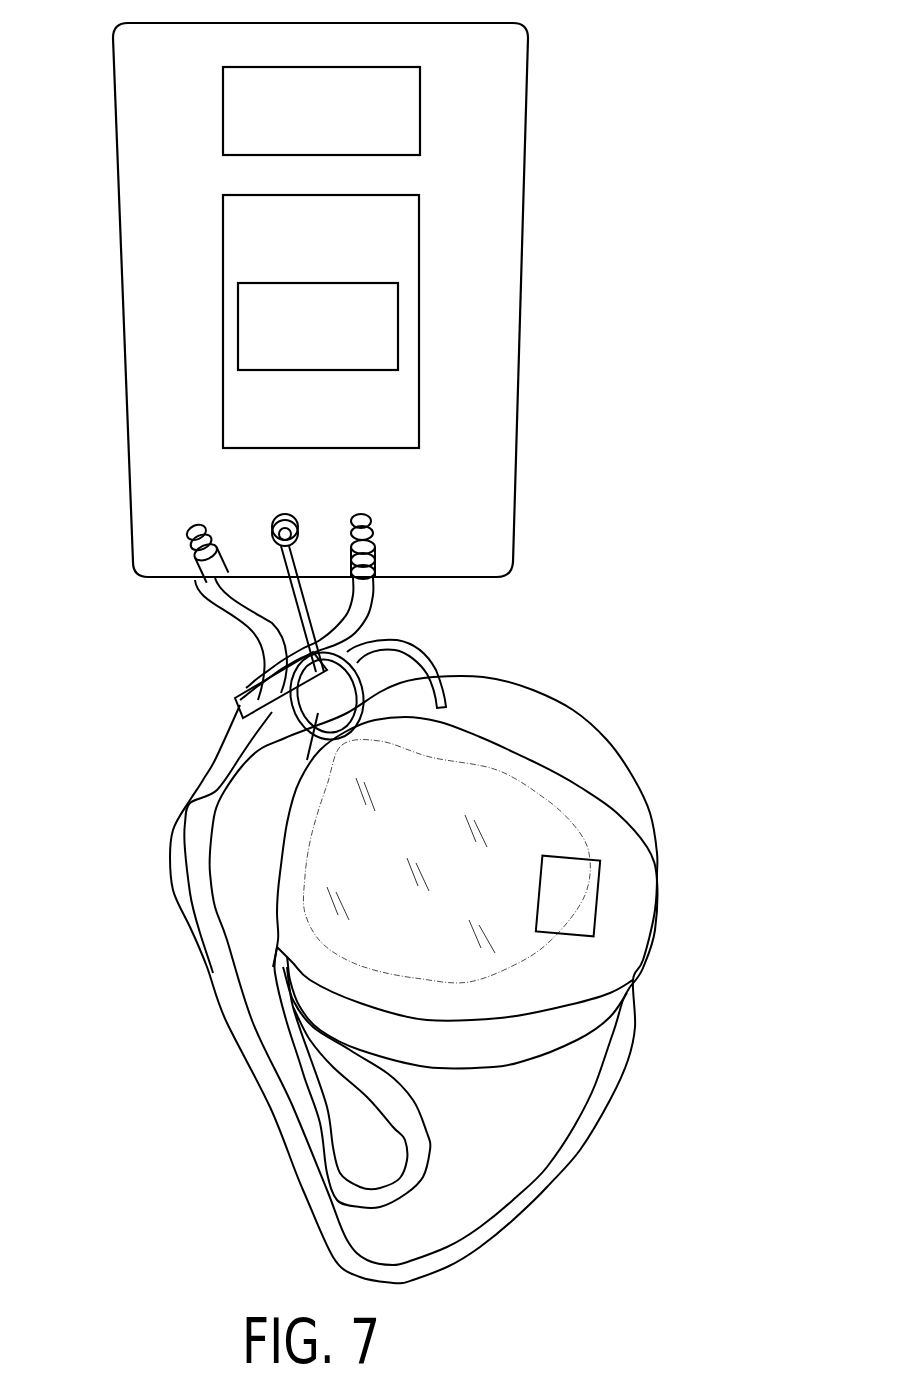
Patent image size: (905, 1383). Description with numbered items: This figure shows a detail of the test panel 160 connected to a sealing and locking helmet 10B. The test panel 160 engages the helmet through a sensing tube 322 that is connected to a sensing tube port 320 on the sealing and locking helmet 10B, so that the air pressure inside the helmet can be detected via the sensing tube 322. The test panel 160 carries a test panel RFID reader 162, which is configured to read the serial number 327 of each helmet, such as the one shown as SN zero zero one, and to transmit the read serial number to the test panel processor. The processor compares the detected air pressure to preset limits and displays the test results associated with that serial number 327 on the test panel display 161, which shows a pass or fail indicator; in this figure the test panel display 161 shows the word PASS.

The test panel 160 is at (527, 127).
The test panel display 161 is at (402, 230).
The test panel RFID reader 162 is at (405, 75).
The sensing tube port 320 is at (440, 709).
The sensing tube 322 is at (433, 663).
The serial number 327 is at (600, 861).
The sealing and locking helmet 10B is at (656, 918).